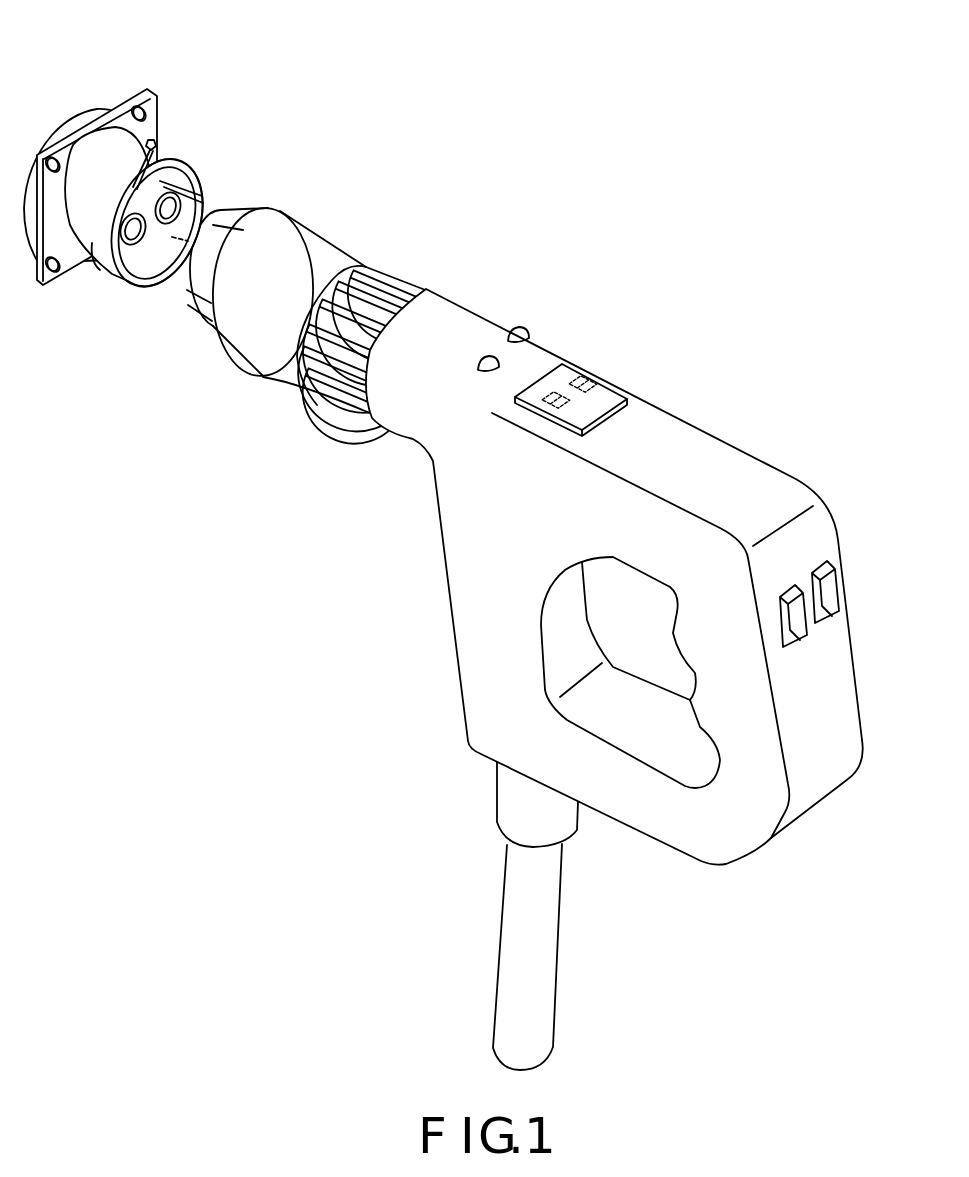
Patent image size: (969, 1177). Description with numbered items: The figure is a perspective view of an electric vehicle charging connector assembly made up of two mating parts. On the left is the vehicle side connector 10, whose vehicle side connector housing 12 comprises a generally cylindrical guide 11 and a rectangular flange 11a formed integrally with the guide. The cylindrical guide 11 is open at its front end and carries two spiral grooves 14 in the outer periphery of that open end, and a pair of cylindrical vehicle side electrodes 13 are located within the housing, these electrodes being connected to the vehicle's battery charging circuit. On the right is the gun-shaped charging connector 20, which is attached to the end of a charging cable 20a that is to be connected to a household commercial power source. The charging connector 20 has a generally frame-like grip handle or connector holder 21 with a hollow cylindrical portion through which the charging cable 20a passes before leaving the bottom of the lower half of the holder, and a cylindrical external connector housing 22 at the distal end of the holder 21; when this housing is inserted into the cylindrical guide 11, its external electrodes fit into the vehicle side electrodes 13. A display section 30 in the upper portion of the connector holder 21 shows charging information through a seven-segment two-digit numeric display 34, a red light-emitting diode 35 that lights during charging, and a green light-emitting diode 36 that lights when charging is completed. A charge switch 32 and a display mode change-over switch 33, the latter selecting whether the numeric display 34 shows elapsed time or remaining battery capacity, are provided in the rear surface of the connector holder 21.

The vehicle side connector 10 is at (233, 87).
The cylindrical guide 11 is at (137, 204).
The rectangular flange 11a is at (143, 97).
The vehicle side connector housing 12 is at (126, 149).
The vehicle side electrodes 13 is at (134, 232).
The spiral grooves 14 is at (155, 144).
The charging connector 20 is at (744, 405).
The charging cable 20a is at (551, 973).
The connector holder 21 is at (472, 610).
The external connector housing 22 is at (243, 221).
The display section 30 is at (618, 323).
The charge switch 32 is at (797, 637).
The display mode change-over switch 33 is at (836, 621).
The numeric display 34 is at (620, 393).
The red light-emitting diode 35 is at (491, 358).
The green light-emitting diode 36 is at (521, 333).